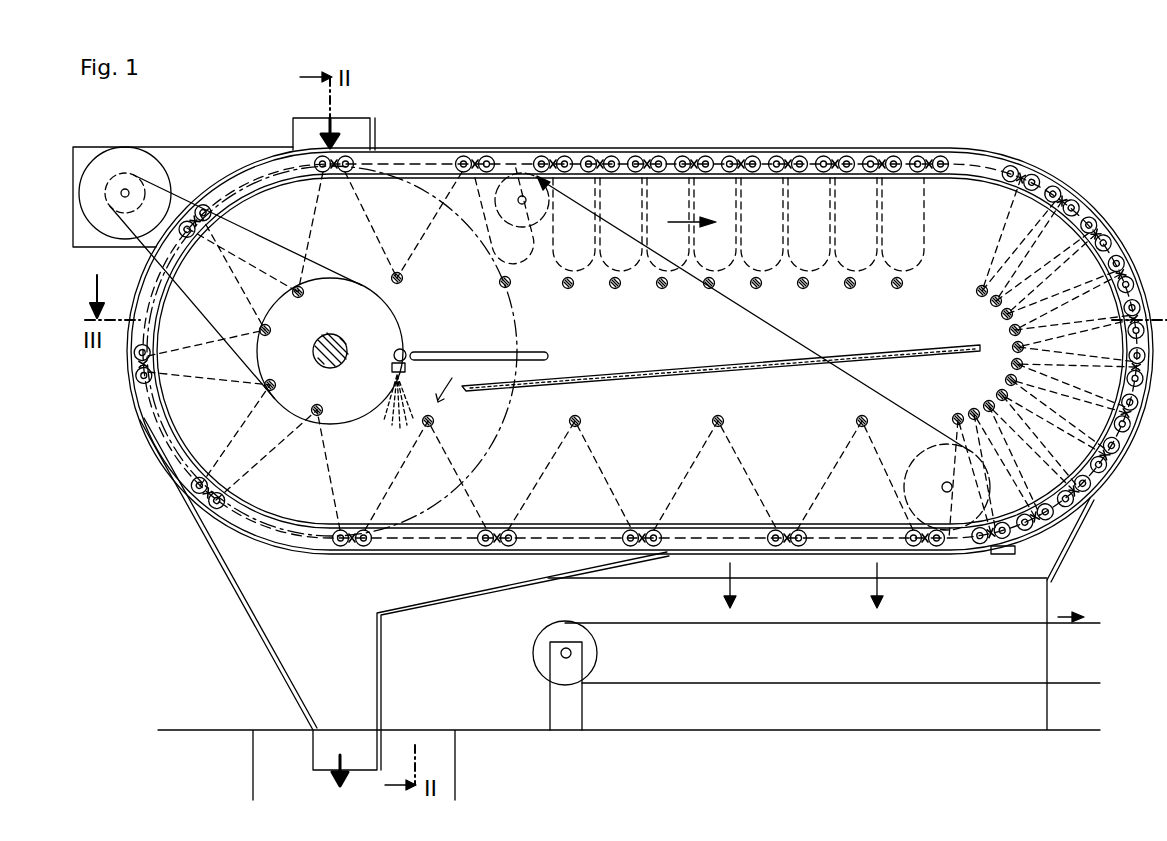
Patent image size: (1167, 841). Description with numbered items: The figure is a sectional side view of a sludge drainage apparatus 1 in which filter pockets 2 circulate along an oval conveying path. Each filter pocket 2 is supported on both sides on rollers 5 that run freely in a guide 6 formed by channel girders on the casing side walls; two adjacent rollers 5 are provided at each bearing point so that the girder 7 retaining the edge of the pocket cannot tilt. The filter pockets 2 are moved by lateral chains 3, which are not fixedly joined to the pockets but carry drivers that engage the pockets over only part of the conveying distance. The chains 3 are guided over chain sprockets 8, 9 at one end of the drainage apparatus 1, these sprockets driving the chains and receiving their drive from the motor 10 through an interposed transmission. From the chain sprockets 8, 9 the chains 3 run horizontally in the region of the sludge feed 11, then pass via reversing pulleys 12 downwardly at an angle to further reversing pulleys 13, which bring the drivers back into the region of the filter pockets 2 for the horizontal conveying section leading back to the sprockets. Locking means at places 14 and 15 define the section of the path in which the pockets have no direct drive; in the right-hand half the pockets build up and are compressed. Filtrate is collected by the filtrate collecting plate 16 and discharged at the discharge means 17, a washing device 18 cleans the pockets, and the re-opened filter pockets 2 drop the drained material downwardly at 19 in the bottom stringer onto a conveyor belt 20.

The drainage apparatus 1 is at (722, 147).
The filter pockets 2 is at (415, 232).
The lateral chains 3 is at (748, 318).
The rollers 5 is at (205, 210).
The guide 6 is at (700, 522).
The girder 7 is at (478, 157).
The chain sprocket 8 is at (508, 323).
The chain sprocket 9 is at (425, 351).
The motor 10 is at (125, 165).
The sludge feed 11 is at (355, 128).
The reversing pulleys 12 is at (515, 175).
The reversing pulleys 13 is at (915, 458).
The place of locking means 14 is at (553, 192).
The place of locking means 15 is at (1000, 560).
The filtrate collecting plate 16 is at (885, 348).
The discharge means for the filtrate 17 is at (322, 772).
The washing device 18 is at (452, 352).
The discharge point for drained material 19 is at (733, 600).
The conveyor belt 20 is at (822, 686).